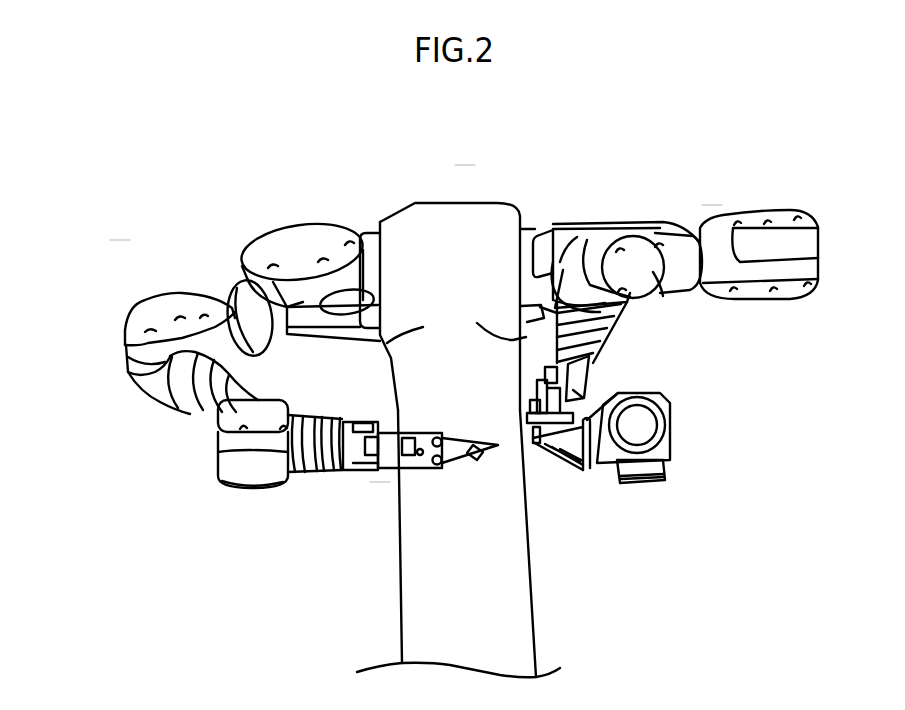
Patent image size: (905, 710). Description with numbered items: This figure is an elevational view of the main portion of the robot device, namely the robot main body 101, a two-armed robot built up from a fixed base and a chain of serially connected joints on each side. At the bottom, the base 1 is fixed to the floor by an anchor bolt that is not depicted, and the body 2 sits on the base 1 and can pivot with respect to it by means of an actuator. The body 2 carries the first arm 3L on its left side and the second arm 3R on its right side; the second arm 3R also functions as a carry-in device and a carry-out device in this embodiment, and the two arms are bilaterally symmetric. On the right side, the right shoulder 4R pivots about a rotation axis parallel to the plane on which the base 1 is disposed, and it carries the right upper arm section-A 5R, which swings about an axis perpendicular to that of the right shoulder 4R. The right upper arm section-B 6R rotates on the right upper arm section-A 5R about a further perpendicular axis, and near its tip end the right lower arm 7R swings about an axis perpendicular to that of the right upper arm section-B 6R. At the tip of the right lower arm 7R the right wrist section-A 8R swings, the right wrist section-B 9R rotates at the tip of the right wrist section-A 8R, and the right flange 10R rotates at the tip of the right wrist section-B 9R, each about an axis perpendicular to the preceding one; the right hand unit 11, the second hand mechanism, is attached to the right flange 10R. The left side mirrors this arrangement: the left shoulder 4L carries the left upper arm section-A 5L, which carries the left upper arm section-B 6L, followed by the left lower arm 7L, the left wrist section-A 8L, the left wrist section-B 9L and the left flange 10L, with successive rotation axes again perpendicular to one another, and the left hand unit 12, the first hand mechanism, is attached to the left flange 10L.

The robot main body 101 is at (471, 152).
The base 1 is at (527, 607).
The body 2 is at (502, 217).
The second arm 3R is at (123, 220).
The first arm 3L is at (724, 191).
The right shoulder 4R is at (372, 234).
The left shoulder 4L is at (540, 233).
The right upper arm section-A 5R is at (305, 225).
The left upper arm section-A 5L is at (625, 223).
The right upper arm section-B 6R is at (238, 292).
The left upper arm section-B 6L is at (748, 221).
The right lower arm 7R is at (140, 388).
The left lower arm 7L is at (792, 282).
The right wrist section-A 8R is at (200, 428).
The left wrist section-A 8L is at (693, 294).
The right wrist section-B 9R is at (304, 419).
The left wrist section-B 9L is at (603, 315).
The right flange 10R is at (341, 420).
The left flange 10L is at (600, 352).
The right hand unit 11 is at (385, 498).
The left hand unit 12 is at (683, 471).